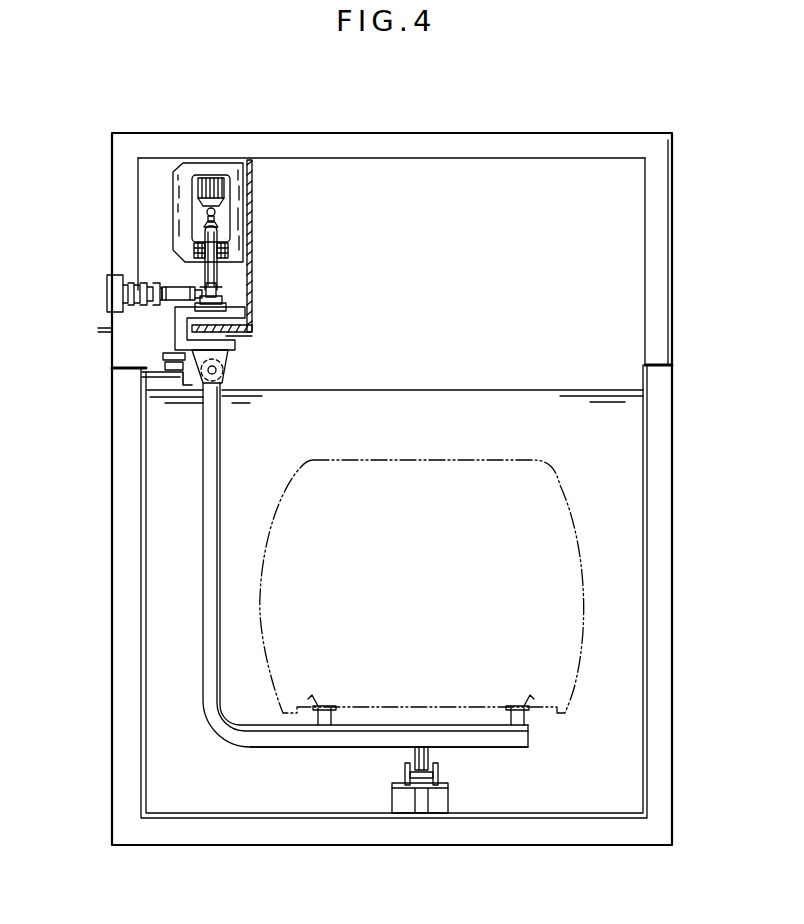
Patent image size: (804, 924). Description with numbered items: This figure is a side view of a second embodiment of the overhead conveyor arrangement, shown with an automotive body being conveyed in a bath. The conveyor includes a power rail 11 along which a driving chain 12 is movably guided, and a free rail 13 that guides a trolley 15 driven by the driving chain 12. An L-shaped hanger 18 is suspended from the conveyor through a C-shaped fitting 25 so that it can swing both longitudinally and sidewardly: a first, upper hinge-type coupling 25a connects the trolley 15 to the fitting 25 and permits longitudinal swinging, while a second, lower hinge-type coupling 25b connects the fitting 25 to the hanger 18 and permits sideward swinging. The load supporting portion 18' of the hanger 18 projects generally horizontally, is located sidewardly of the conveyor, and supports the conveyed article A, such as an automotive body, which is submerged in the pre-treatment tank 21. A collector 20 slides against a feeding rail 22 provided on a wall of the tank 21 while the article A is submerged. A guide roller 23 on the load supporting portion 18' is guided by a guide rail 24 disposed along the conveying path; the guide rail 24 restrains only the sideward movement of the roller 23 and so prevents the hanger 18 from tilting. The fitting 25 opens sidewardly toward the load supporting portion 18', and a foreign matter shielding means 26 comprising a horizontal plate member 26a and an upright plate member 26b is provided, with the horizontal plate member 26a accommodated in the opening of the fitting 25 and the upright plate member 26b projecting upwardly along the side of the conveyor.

The power rail 11 is at (212, 180).
The driving chain 12 is at (215, 212).
The free rail 13 is at (228, 250).
The rear-most front trolley 15 is at (221, 279).
The L-shaped hanger 18 is at (344, 565).
The load supporting portion 18' is at (389, 768).
The collector 20 is at (177, 294).
The tank 21 is at (668, 258).
The feeding rail 22 is at (157, 292).
The guide roller 23 is at (420, 786).
The guide rail 24 is at (437, 770).
The C-shaped fitting 25 is at (175, 331).
The first hinge-type coupling 25a is at (222, 298).
The second hinge-type coupling 25b is at (222, 373).
The foreign matter shielding means 26 is at (254, 225).
The horizontal plate member 26a is at (232, 335).
The upright plate member 26b is at (236, 328).
The conveyed article A is at (567, 512).